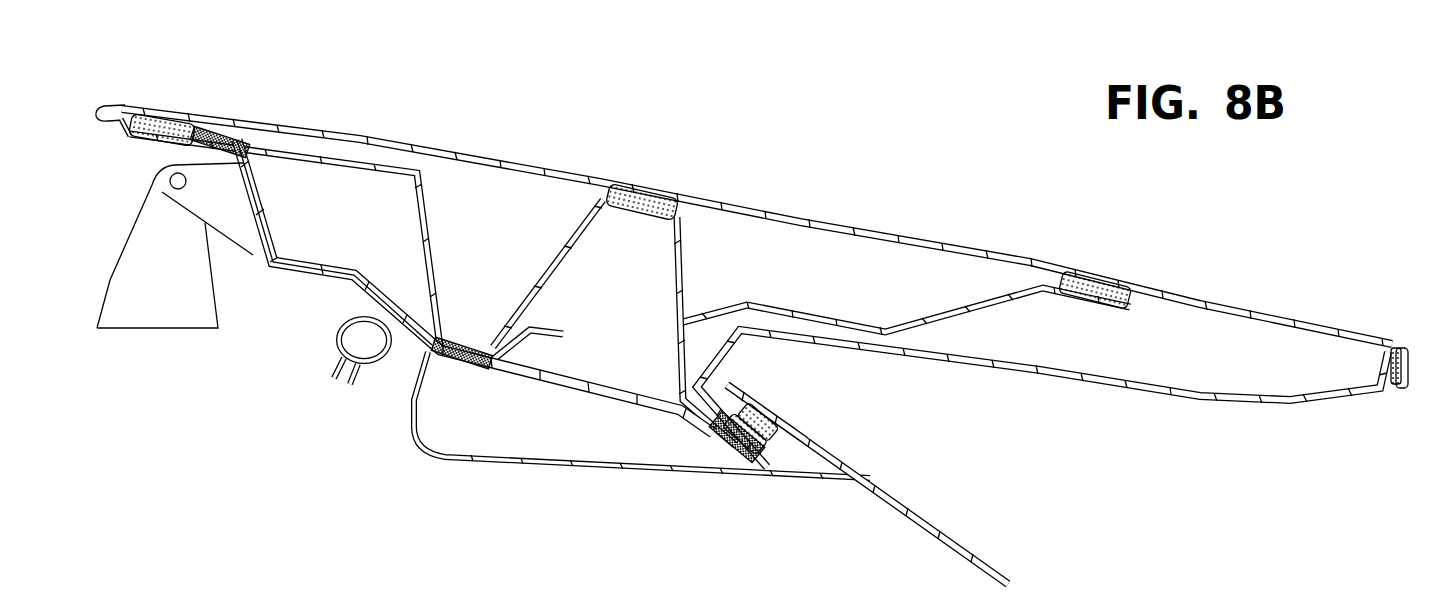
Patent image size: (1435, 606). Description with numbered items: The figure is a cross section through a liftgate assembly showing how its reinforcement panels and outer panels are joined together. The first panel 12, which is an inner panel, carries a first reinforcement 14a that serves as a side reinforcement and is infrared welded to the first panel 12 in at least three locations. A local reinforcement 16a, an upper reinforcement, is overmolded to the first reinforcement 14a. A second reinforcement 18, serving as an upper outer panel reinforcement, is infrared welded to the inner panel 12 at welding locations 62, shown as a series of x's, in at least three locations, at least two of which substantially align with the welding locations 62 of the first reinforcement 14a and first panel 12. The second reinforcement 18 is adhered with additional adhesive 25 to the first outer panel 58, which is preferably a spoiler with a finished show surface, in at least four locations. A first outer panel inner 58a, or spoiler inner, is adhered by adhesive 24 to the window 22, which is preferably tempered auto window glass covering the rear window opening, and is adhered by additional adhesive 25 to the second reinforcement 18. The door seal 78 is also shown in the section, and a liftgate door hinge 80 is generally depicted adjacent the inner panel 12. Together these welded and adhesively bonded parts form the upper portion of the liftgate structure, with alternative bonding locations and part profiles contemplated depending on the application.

The first panel 12 is at (121, 133).
The first reinforcement 14a is at (288, 272).
The local reinforcement 16a is at (278, 210).
The second reinforcement 18 is at (424, 208).
The window 22 is at (862, 475).
The adhesive 24 is at (773, 407).
The additional adhesive 25 is at (152, 120).
The first outer panel 58 is at (795, 215).
The first outer panel inner 58a is at (1268, 400).
The welding location 62 is at (230, 143).
The door seal 78 is at (345, 372).
The door hinge 80 is at (171, 343).